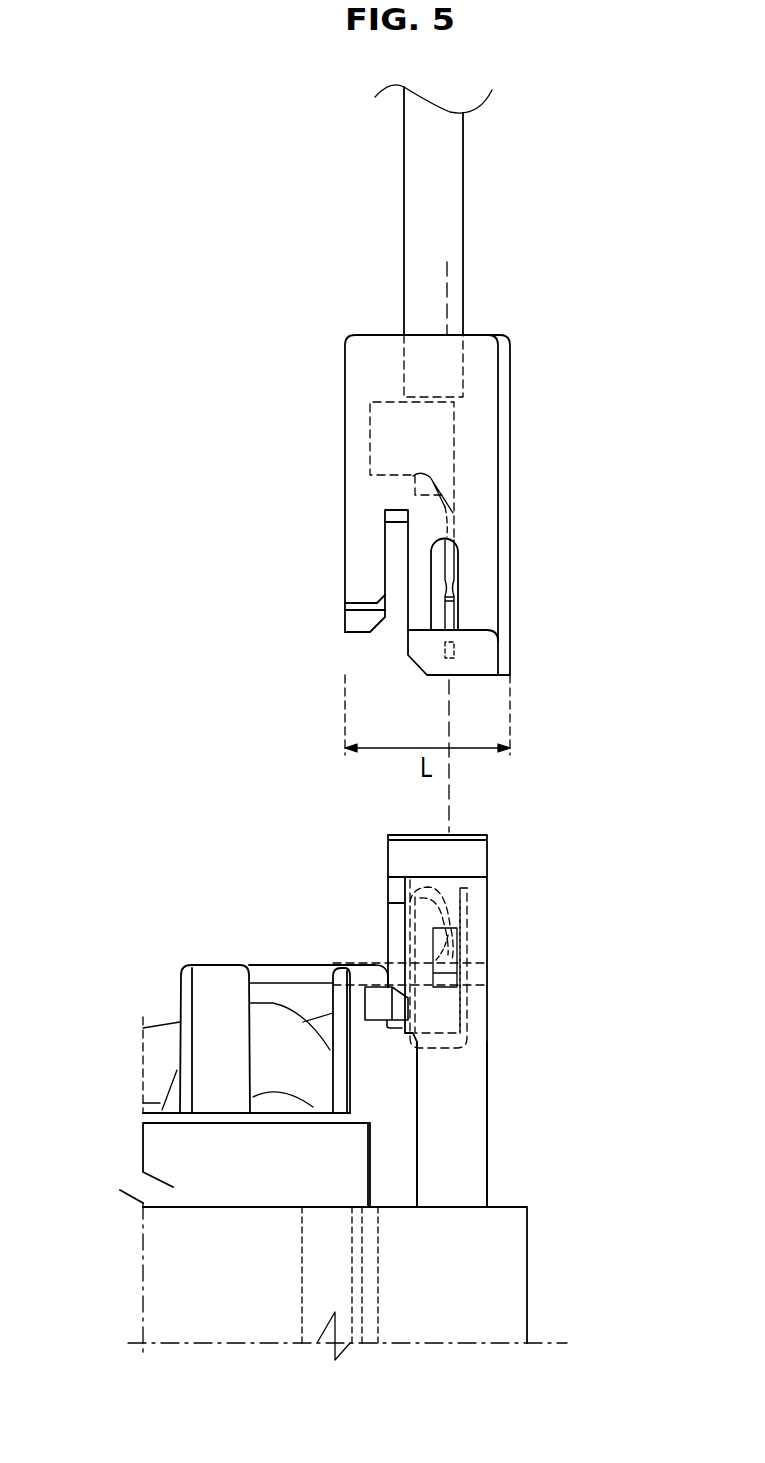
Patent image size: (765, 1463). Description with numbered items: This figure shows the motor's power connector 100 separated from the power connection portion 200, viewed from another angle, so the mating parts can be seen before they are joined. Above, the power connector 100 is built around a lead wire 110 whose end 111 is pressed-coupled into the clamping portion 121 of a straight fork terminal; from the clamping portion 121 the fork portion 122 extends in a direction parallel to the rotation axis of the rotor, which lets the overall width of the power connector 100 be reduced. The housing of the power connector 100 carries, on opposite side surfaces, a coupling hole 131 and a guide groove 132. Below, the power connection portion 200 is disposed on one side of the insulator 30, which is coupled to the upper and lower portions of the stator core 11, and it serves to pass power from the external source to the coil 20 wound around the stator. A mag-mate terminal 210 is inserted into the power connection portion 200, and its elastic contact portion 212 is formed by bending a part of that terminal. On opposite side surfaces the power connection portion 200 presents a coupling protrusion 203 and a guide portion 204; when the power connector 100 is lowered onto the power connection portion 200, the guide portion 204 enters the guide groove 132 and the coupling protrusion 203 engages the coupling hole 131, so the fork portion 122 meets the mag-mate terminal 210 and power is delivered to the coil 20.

The power connector 100 is at (540, 327).
The lead wire 110 is at (412, 258).
The end of the lead wire 111 is at (415, 491).
The clamping portion 121 is at (370, 418).
The fork portion 122 is at (451, 565).
The coupling hole 131 is at (451, 590).
The guide groove 132 is at (395, 562).
The power connection portion 200 is at (480, 1033).
The coupling protrusion 203 is at (457, 975).
The guide portion 204 is at (392, 925).
The mag-mate terminal 210 is at (483, 920).
The elastic contact portion 212 is at (443, 892).
The coil 20 is at (267, 963).
The insulator 30 is at (505, 1150).
The stator core 11 is at (550, 1290).